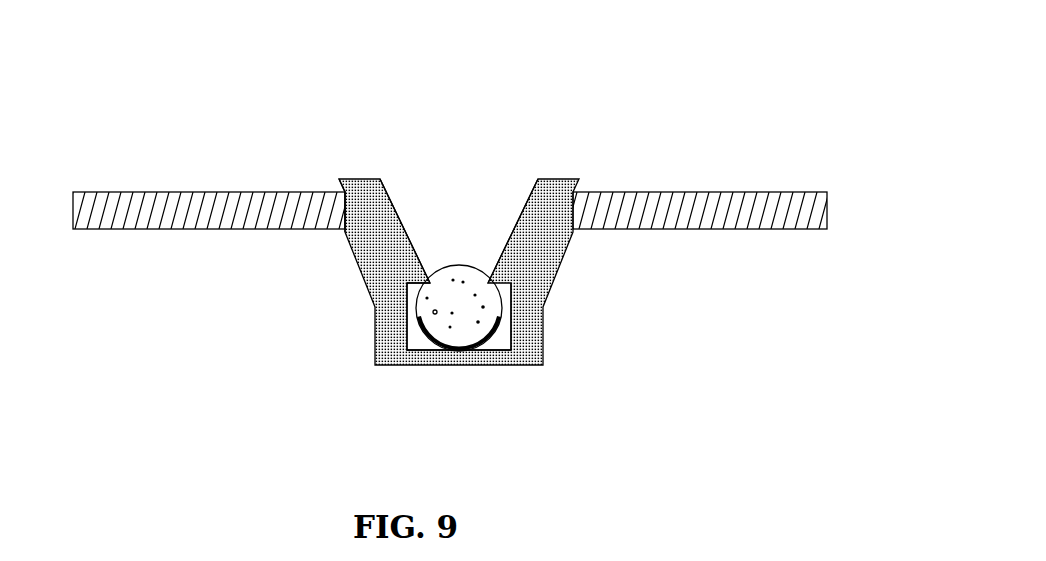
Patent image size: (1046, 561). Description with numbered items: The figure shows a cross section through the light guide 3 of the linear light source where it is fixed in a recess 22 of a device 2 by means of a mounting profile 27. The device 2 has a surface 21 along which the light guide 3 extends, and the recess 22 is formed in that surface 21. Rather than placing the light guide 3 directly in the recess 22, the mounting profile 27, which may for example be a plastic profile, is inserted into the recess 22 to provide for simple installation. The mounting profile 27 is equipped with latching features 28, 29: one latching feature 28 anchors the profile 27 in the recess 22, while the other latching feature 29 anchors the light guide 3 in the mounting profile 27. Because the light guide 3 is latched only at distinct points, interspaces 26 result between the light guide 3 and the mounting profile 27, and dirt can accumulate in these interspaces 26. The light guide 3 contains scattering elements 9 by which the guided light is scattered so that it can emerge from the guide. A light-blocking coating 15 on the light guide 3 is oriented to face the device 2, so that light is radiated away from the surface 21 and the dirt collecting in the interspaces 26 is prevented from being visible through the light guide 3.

The device 2 is at (208, 138).
The surface of the device 21 is at (668, 192).
The recess 22 is at (562, 183).
The mounting profile 27 is at (380, 183).
The latching feature 28 is at (338, 183).
The light guide 3 is at (452, 265).
The scattering element 9 is at (470, 307).
The light-blocking coating 15 is at (503, 337).
The interspace 26 is at (409, 350).
The latching feature 29 is at (430, 283).